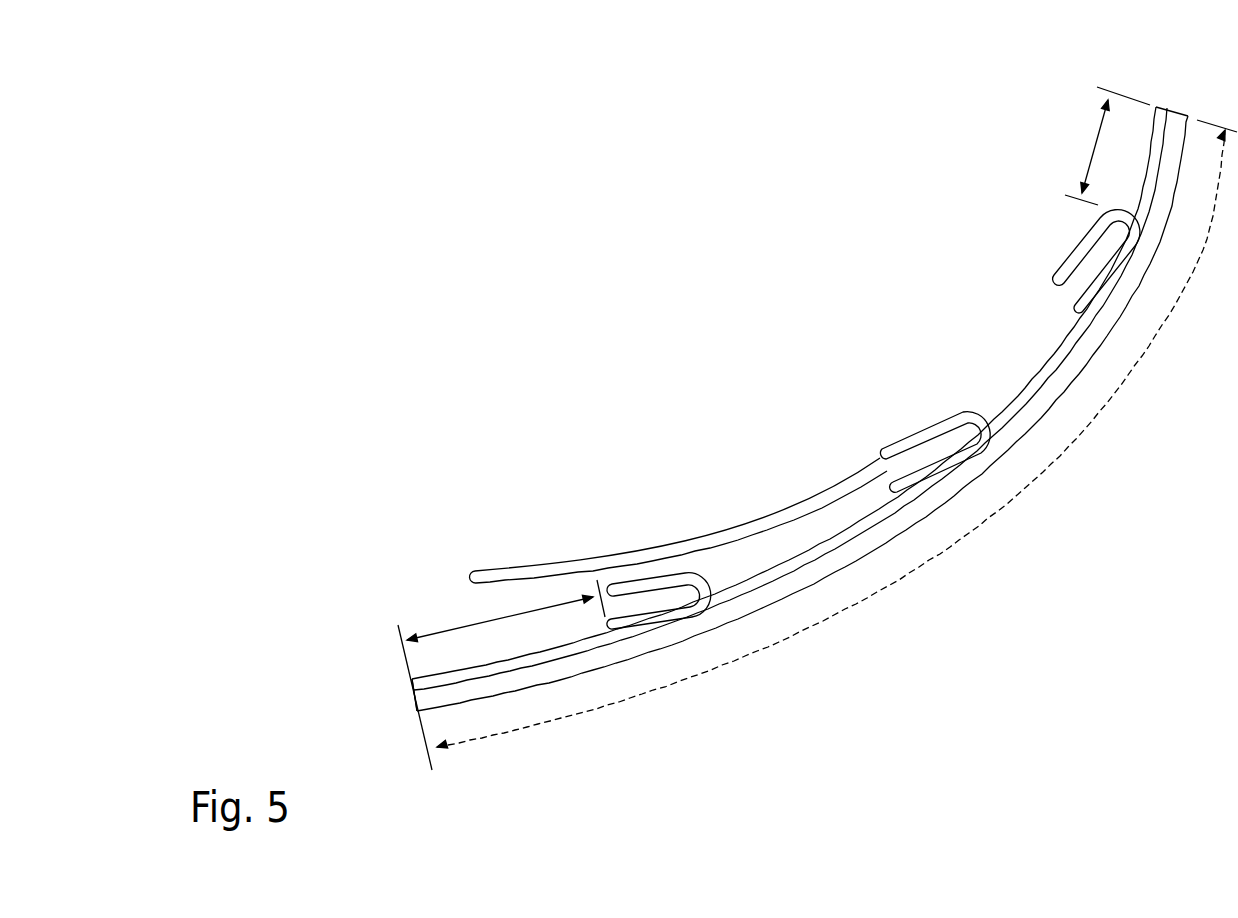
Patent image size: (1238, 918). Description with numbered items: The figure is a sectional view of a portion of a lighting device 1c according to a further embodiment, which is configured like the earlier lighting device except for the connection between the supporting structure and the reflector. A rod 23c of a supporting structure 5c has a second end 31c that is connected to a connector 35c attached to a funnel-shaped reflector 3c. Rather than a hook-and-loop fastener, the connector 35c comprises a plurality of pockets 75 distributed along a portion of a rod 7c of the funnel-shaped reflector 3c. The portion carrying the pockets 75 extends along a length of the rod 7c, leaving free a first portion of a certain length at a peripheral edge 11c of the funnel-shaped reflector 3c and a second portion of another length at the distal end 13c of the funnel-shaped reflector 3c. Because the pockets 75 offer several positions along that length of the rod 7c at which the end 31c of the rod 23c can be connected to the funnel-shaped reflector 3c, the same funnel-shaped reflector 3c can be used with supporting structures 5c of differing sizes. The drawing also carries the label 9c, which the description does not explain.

The lighting device 1c is at (472, 498).
The funnel-shaped reflector 3c is at (360, 688).
The supporting structure 5c is at (748, 420).
The rod of the funnel-shaped reflector 7c is at (692, 640).
The inner layer 9c is at (1158, 107).
The peripheral edge 11c is at (412, 695).
The distal end 13c is at (1178, 111).
The rod 23c is at (604, 556).
The second end 31c is at (948, 407).
The connector 35c is at (1020, 190).
The pocket 75 is at (707, 565).